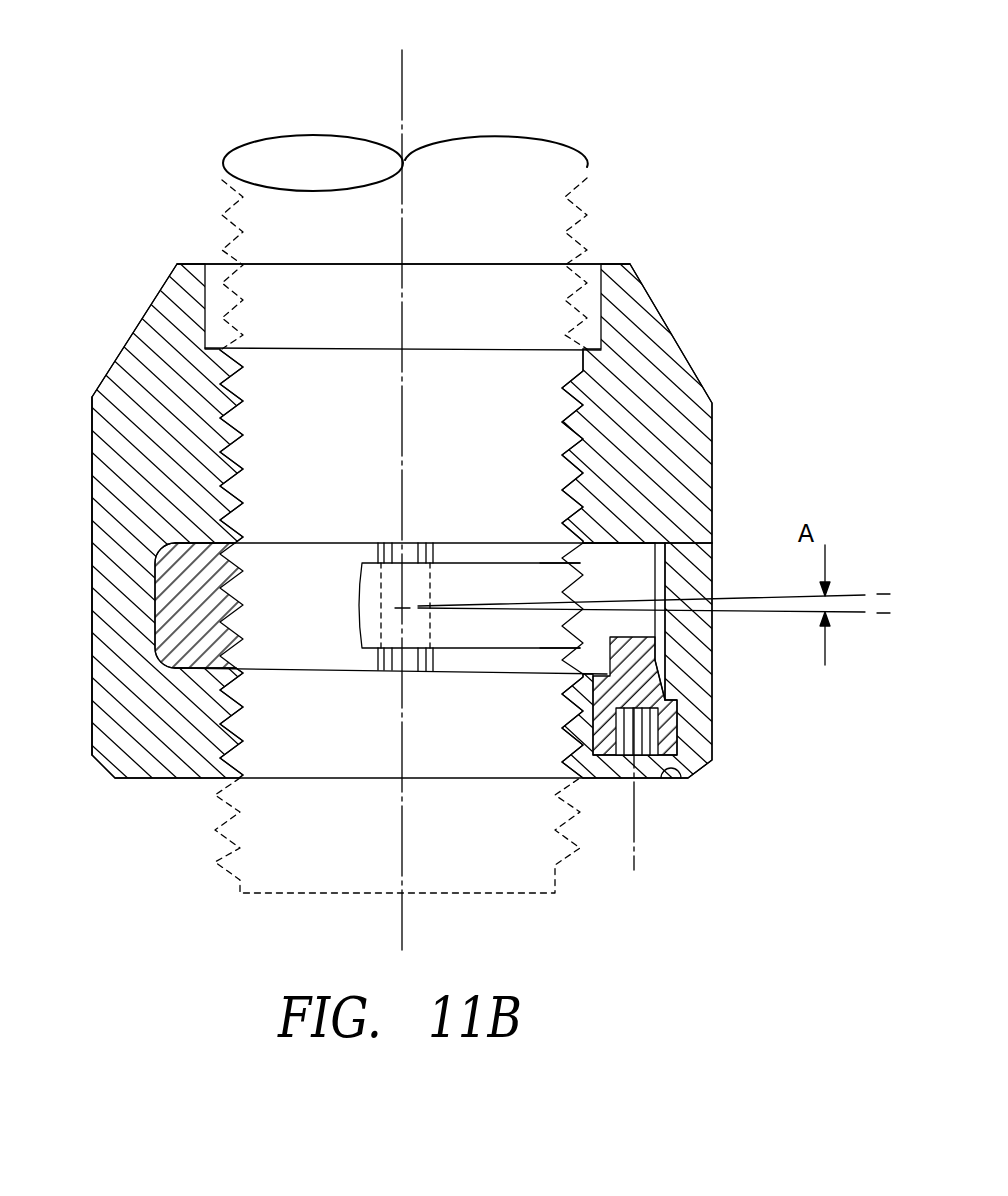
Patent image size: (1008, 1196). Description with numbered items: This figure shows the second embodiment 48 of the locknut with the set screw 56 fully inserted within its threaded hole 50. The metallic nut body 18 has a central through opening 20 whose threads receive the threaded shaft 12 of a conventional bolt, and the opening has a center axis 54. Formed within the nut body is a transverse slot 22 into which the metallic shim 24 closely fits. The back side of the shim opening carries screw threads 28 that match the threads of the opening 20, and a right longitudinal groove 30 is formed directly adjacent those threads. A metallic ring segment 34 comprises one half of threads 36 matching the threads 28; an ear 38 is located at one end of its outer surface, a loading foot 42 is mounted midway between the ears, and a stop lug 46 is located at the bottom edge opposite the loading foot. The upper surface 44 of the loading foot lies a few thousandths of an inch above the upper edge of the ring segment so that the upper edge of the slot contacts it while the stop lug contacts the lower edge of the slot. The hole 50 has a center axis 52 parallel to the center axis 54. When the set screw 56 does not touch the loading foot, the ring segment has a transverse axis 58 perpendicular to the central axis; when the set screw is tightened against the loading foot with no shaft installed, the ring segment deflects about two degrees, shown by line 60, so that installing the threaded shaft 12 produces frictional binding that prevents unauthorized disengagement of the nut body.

The threaded shaft 12 is at (592, 200).
The nut body 18 is at (668, 323).
The central through opening 20 is at (243, 461).
The transverse slot 22 is at (285, 662).
The shim 24 is at (153, 626).
The screw threads 28 is at (240, 593).
The right longitudinal groove 30 is at (420, 672).
The ring segment 34 is at (521, 557).
The threads 36 is at (548, 615).
The ear 38 is at (411, 548).
The loading foot 42 is at (712, 560).
The upper surface 44 is at (625, 543).
The stop lug 46 is at (708, 643).
The second embodiment of locknut 48 is at (117, 200).
The hole 50 is at (666, 790).
The center axis 52 is at (636, 824).
The center axis 54 is at (405, 97).
The set screw 56 is at (708, 710).
The transverse axis 58 is at (848, 615).
The line 60 is at (848, 593).